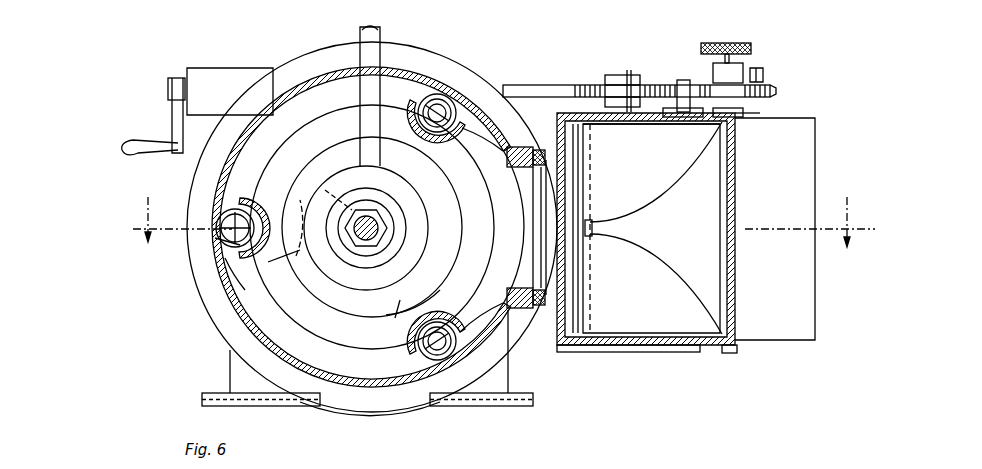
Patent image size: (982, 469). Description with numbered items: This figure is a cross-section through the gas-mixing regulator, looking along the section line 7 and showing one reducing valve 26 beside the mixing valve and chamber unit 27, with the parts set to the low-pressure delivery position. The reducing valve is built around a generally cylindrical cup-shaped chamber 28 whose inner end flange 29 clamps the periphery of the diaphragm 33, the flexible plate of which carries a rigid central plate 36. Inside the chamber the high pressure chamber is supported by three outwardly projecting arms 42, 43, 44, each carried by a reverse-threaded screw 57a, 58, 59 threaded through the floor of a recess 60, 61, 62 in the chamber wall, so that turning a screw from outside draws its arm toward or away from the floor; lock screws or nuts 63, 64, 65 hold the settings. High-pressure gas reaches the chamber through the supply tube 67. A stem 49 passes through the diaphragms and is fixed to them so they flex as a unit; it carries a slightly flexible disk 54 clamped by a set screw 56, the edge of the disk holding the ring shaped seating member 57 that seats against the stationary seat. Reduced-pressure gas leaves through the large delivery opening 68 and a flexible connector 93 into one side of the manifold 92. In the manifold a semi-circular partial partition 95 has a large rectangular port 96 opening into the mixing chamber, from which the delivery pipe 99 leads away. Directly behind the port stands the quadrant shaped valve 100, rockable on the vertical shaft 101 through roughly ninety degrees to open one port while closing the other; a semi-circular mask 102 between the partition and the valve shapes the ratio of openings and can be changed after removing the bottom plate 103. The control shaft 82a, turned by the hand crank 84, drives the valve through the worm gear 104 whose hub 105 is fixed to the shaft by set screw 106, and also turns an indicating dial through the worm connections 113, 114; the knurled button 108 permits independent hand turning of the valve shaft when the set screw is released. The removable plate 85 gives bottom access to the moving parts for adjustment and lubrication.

The section line 7- 7 is at (498, 227).
The reducing valve 26 is at (225, 325).
The mixing valve and chamber unit 27 is at (700, 356).
The cylindrical chamber 28 is at (320, 78).
The inner end flange 29 is at (326, 400).
The diaphragm 33 is at (230, 366).
The rigid central plate 36 is at (372, 227).
The outwardly projecting arm 42 is at (430, 150).
The outwardly projecting arm 43 is at (290, 255).
The outwardly projecting arm 44 is at (395, 318).
The stem 49 is at (395, 222).
The slightly flexible disk 54 is at (340, 262).
The set screw 56 is at (390, 230).
The ring shaped seating member 57 is at (325, 190).
The screw 57a is at (440, 108).
The screw 58 is at (215, 215).
The screw 59 is at (435, 358).
The recess 60 is at (438, 95).
The recess 61 is at (232, 258).
The recess 62 is at (410, 383).
The lock screw or nut 63 is at (472, 82).
The lock screw or nut 64 is at (448, 346).
The lock screw or nut 65 is at (220, 238).
The high pressure supply tube 67 is at (380, 33).
The delivery opening 68 is at (527, 305).
The control shaft 82a is at (538, 85).
The hand crank 84 is at (135, 140).
The removable plate 85 is at (460, 406).
The manifold 92 is at (771, 185).
The flexible connector 93 is at (548, 158).
The semi-circular partial partition 95 is at (592, 188).
The rectangular port 96 is at (650, 127).
The delivery connection or pipe 99 is at (797, 155).
The quadrant shaped valve 100 is at (653, 228).
The vertical shaft 101 is at (748, 106).
The semi-circular mask 102 is at (640, 295).
The plate 103 is at (613, 352).
The worm gear 104 is at (776, 90).
The hub 105 is at (696, 62).
The set screw 106 is at (764, 68).
The knurled button 108 is at (714, 44).
The worm gear and worm connection 113 is at (584, 85).
The worm gear and worm connection 114 is at (629, 75).